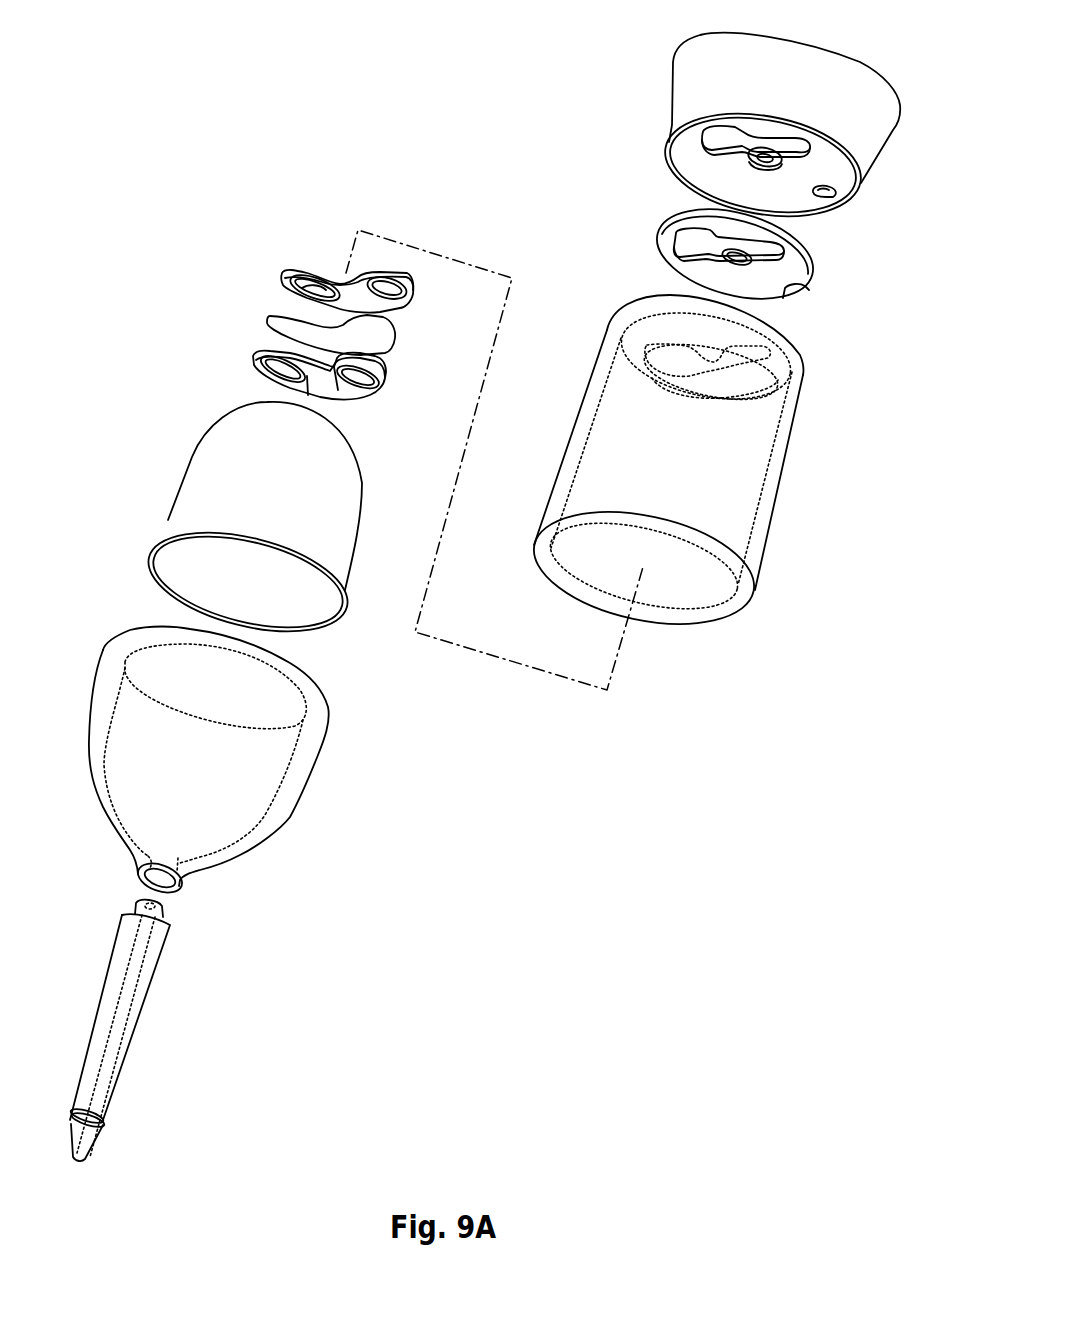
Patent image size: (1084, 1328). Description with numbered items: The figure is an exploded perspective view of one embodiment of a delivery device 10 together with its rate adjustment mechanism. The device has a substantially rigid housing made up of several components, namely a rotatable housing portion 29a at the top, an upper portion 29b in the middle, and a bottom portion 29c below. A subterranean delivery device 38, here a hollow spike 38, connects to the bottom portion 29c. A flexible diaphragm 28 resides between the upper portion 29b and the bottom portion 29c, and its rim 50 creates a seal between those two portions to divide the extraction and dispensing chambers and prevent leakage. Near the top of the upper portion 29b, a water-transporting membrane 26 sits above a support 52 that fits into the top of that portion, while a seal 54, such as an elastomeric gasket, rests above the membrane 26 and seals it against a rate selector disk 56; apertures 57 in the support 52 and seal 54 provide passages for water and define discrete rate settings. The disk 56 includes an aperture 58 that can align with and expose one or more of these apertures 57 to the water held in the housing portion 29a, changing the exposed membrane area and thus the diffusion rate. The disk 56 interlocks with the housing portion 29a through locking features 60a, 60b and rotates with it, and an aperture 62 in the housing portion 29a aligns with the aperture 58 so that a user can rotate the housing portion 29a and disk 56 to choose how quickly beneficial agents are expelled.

The delivery device 10 is at (314, 77).
The housing portion 29a is at (870, 138).
The aperture 62 is at (684, 129).
The locking feature 60a is at (856, 186).
The rate selector disk 56 is at (803, 263).
The aperture 58 is at (683, 233).
The locking feature 60b is at (795, 292).
The upper portion of housing 29b is at (768, 497).
The seal 54 is at (282, 281).
The aperture 57 is at (340, 285).
The water-transporting membrane 26 is at (268, 320).
The support 52 is at (257, 363).
The flexible diaphragm 28 is at (207, 453).
The rim 50 is at (147, 568).
The bottom portion of housing 29c is at (308, 735).
The subterranean delivery device 38 is at (128, 1028).